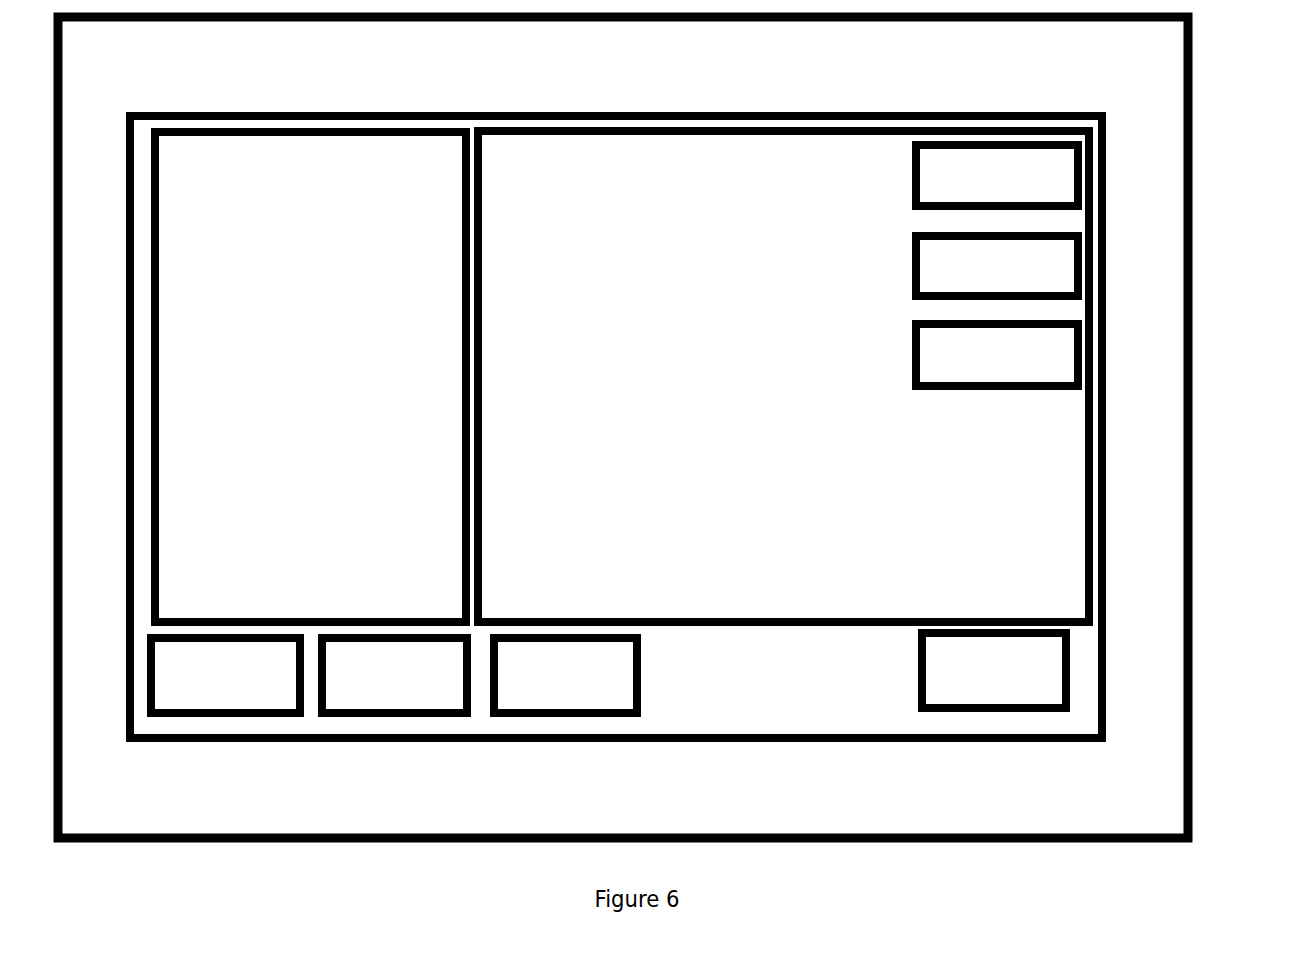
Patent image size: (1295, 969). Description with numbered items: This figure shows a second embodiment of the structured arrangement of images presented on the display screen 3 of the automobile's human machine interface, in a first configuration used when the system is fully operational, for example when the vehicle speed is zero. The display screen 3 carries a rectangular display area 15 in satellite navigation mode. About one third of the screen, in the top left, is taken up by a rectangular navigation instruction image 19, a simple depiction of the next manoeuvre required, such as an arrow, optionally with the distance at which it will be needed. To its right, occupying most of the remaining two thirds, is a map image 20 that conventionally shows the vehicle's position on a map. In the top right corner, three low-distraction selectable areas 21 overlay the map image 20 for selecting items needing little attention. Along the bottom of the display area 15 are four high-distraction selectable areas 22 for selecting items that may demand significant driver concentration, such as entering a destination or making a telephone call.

The display screen 3 is at (1142, 168).
The rectangular display area 15 is at (1103, 585).
The rectangular navigation instruction image 19 is at (285, 309).
The map image 20 is at (665, 309).
The low-distraction selectable areas 21 is at (1007, 187).
The high-distraction selectable areas 22 is at (214, 680).